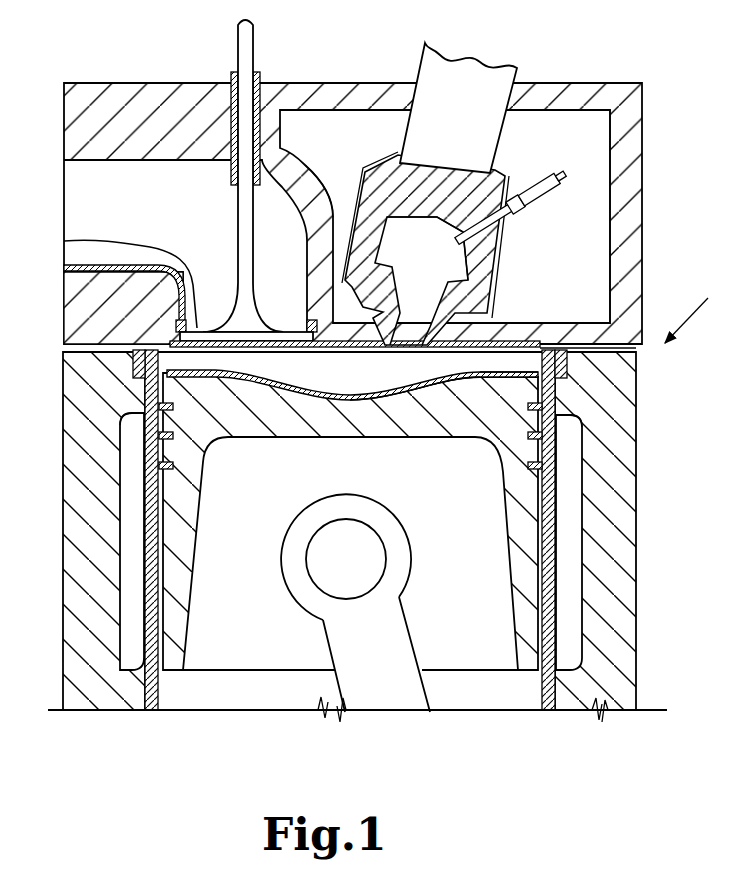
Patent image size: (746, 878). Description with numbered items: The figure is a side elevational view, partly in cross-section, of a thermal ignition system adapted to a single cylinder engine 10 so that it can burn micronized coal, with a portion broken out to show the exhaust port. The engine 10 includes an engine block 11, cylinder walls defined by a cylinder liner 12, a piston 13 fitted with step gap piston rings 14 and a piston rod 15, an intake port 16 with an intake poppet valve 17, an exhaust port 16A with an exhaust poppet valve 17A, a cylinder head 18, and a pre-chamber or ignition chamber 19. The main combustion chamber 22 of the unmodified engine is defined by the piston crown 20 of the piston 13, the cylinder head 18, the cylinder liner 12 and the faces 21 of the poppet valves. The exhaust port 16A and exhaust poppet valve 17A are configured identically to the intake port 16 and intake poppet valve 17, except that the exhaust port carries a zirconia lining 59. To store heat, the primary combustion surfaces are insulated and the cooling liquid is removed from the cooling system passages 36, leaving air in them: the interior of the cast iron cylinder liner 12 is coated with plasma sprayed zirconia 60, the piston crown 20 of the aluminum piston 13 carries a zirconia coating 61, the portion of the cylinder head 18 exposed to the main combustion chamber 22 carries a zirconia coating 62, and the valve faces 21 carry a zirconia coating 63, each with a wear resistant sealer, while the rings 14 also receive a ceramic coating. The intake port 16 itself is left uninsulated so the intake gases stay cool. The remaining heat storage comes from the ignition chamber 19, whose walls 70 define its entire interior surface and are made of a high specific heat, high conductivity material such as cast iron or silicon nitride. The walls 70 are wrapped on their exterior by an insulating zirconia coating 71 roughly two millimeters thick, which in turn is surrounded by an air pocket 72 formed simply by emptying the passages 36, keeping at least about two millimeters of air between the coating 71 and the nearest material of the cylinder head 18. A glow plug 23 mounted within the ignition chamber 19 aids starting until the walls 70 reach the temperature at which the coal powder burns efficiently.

The single cylinder engine 10 is at (697, 306).
The engine block 11 is at (612, 513).
The cylinder liner 12 is at (553, 486).
The piston 13 is at (358, 476).
The step gap piston rings 14 is at (176, 466).
The piston rod 15 is at (395, 700).
The intake port 16 is at (125, 219).
The exhaust port 16A is at (90, 254).
The intake poppet valve 17 is at (245, 236).
The exhaust poppet valve 17A is at (180, 324).
The cylinder head 18 is at (640, 250).
The pre-chamber combustion chamber or ignition chamber 19 is at (470, 270).
The piston crown 20 is at (300, 394).
The faces of the poppet valves 21 is at (212, 332).
The main combustion chamber 22 is at (390, 386).
The glow plug 23 is at (553, 178).
The cooling system passages 36 is at (390, 110).
The zirconia lining 59 is at (100, 292).
The plasma sprayed zirconia coating of cylinder liner 60 is at (560, 563).
The zirconia coating of piston crown 61 is at (438, 378).
The zirconia coating of cylinder head 62 is at (352, 348).
The zirconia coating of valve faces 63 is at (235, 347).
The ignition chamber walls 70 is at (497, 243).
The zirconia coating 71 is at (363, 185).
The air pocket 72 is at (345, 110).